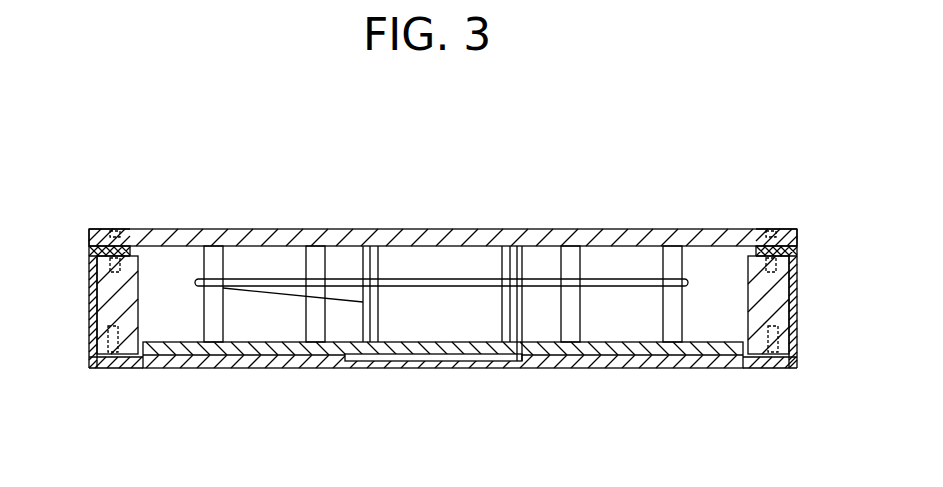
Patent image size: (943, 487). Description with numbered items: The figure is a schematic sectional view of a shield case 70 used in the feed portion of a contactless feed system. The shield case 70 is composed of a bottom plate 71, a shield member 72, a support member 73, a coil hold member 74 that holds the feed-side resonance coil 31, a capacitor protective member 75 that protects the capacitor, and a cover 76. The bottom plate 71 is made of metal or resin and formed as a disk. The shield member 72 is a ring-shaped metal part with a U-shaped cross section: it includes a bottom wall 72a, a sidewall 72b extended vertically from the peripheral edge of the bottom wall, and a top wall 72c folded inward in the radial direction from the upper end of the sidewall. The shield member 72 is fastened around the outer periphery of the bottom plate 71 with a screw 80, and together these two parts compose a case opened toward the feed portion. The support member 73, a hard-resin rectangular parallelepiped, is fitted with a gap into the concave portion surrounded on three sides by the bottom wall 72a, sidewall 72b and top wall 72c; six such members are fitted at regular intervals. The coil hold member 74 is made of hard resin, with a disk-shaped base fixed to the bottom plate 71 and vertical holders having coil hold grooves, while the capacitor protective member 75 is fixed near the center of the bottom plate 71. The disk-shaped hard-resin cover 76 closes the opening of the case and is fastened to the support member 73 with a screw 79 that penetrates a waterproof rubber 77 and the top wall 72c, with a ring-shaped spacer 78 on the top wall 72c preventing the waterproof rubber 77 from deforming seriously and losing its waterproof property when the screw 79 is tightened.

The shield case 70 is at (480, 147).
The bottom plate 71 is at (290, 357).
The shield member 72 is at (92, 290).
The bottom wall 72a is at (129, 363).
The sidewall 72b is at (93, 264).
The top wall 72c is at (130, 246).
The support member 73 is at (108, 304).
The coil hold member 74 is at (318, 247).
The capacitor protective member 75 is at (440, 249).
The cover 76 is at (522, 249).
The waterproof rubber 77 is at (90, 229).
The spacer 78 is at (92, 249).
The screw 79 is at (112, 240).
The screw 80 is at (102, 343).
The feed-side resonance coil 31 is at (200, 278).